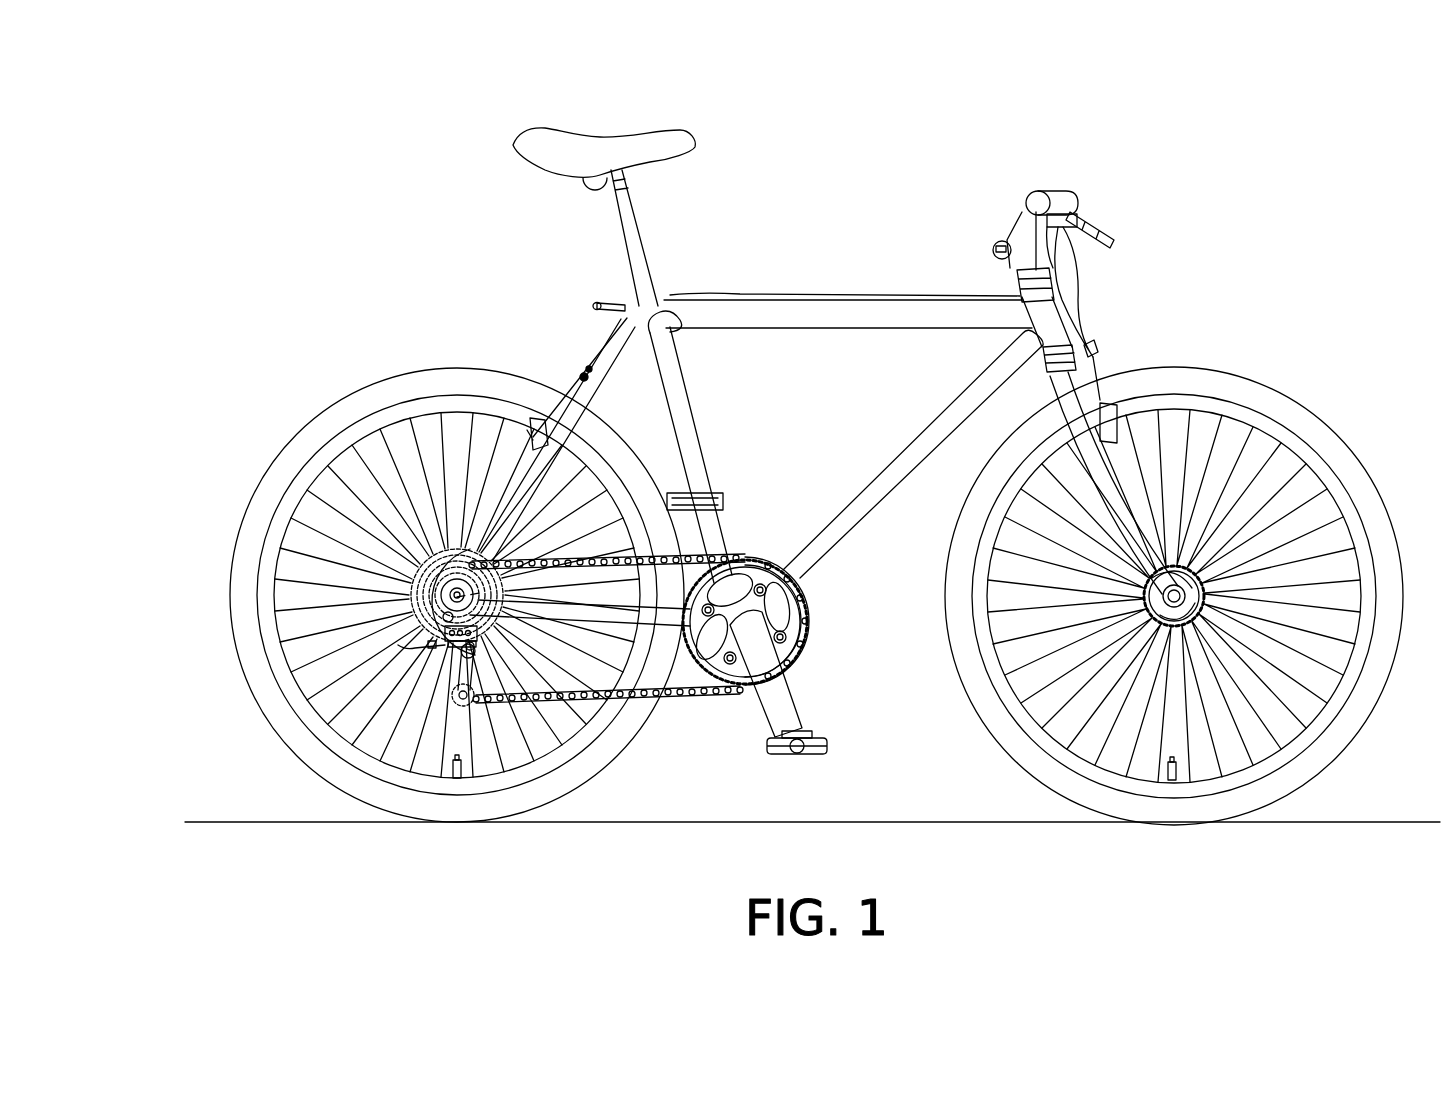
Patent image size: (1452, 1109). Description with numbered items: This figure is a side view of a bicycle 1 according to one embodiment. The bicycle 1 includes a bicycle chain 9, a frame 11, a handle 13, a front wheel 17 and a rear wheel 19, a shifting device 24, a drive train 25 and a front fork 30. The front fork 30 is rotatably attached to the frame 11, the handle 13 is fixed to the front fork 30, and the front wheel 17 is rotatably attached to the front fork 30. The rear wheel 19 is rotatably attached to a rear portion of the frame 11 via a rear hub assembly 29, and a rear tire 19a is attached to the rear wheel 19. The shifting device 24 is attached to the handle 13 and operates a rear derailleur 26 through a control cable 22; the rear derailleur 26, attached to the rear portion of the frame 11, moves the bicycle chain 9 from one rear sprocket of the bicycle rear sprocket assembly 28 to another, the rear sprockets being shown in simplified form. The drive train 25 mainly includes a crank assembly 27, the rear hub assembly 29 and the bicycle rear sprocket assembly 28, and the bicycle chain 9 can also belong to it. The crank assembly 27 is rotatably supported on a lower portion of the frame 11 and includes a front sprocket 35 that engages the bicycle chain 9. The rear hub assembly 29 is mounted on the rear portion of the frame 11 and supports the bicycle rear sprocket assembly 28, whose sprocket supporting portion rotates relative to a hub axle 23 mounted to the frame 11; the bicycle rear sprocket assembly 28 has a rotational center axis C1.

The bicycle 1 is at (836, 164).
The bicycle chain 9 is at (642, 698).
The frame 11 is at (858, 278).
The handle 13 is at (1018, 202).
The front wheel 17 is at (1354, 481).
The rear wheel 19 is at (384, 394).
The rear tire 19a is at (283, 465).
The control cable 22 is at (445, 548).
The hub axle 23 is at (488, 630).
The shifting device 24 is at (1090, 258).
The drive train 25 is at (848, 415).
The rear derailleur 26 is at (437, 721).
The crank assembly 27 is at (791, 549).
The bicycle rear sprocket assembly 28 is at (472, 524).
The rear hub assembly 29 is at (457, 596).
The front fork 30 is at (1108, 470).
The front sprocket 35 is at (830, 660).
The rotational center axis C1 is at (457, 597).